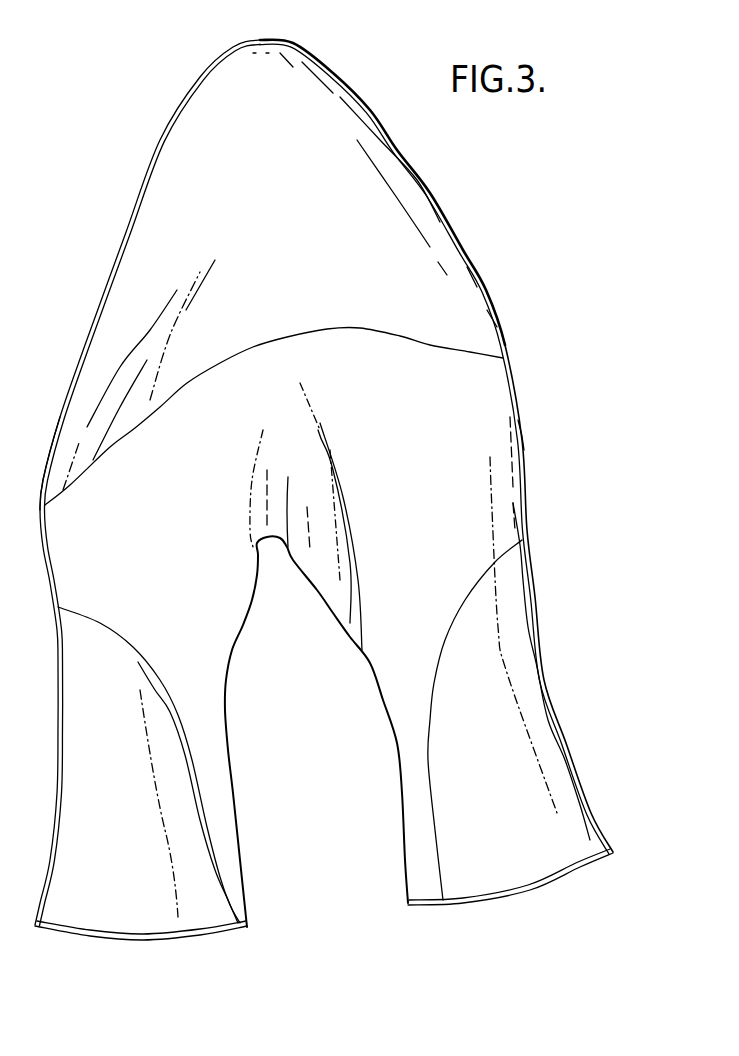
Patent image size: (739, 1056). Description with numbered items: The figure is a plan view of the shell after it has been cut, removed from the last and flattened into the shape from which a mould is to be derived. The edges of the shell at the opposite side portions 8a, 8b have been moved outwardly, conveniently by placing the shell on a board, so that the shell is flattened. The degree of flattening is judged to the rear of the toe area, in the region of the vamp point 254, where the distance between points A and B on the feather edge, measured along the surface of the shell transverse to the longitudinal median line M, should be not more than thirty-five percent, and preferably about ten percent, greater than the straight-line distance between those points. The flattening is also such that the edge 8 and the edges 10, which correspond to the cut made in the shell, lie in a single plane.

The edge of the shell 8 is at (324, 506).
The side portion 8a is at (97, 310).
The side portion 8b is at (473, 263).
The vamp point 254 is at (303, 331).
The edges corresponding to the cut 10 is at (193, 937).
The point on the feather edge A is at (58, 423).
The point on the feather edge B is at (523, 443).
The longitudinal median line M is at (250, 71).